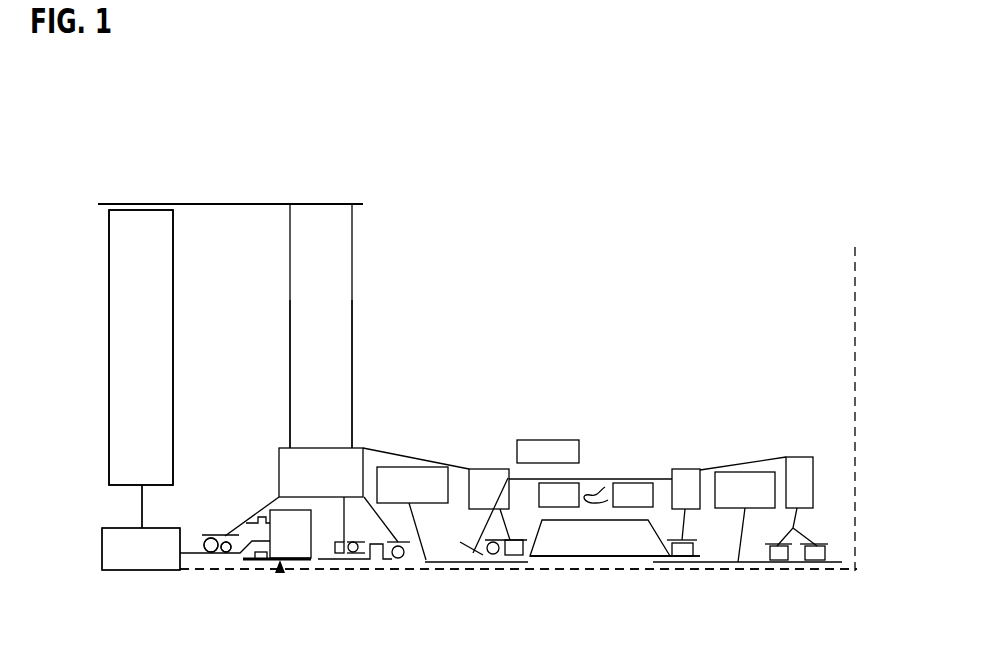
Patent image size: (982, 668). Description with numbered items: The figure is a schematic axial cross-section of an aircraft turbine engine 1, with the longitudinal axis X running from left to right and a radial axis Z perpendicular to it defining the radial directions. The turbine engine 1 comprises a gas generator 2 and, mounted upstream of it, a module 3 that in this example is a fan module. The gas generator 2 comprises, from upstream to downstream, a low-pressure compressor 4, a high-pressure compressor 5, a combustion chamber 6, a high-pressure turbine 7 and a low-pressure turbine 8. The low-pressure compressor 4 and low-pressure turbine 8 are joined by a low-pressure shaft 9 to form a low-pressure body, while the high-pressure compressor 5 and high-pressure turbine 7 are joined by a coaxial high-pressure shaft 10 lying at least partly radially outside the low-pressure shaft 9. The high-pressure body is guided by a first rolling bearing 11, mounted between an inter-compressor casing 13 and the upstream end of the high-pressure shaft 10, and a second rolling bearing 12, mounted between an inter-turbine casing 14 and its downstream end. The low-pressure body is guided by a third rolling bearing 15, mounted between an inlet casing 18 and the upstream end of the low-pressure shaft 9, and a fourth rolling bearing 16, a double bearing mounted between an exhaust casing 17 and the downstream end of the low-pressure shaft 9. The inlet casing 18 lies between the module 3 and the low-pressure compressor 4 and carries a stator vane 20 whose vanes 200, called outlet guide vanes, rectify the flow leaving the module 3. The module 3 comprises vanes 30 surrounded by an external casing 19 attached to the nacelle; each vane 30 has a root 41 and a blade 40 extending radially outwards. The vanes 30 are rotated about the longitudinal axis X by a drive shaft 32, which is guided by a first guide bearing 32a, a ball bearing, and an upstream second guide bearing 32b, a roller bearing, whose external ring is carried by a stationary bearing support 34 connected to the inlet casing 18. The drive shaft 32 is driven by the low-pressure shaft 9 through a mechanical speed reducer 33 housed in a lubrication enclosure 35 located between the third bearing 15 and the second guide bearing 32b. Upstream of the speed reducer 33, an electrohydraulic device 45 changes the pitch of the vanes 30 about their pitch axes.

The turbine engine 1 is at (554, 216).
The gas generator 2 is at (608, 392).
The module 3 is at (92, 450).
The low-pressure compressor 4 is at (425, 487).
The high-pressure compressor 5 is at (565, 485).
The combustion chamber 6 is at (598, 488).
The high-pressure turbine 7 is at (635, 490).
The low-pressure turbine 8 is at (730, 478).
The low-pressure shaft 9 is at (590, 565).
The high-pressure shaft 10 is at (540, 560).
The first rolling bearing 11 is at (480, 558).
The second rolling bearing 12 is at (668, 565).
The inter-compressor casing 13 is at (482, 475).
The inter-turbine casing 14 is at (682, 475).
The third rolling bearing 15 is at (393, 562).
The fourth rolling bearing 16 is at (820, 565).
The exhaust casing 17 is at (803, 470).
The inlet casing 18 is at (356, 452).
The external casing 19 is at (208, 204).
The stator vane 20 is at (372, 264).
The vanes 30 is at (80, 292).
The drive shaft 32 is at (218, 565).
The first guide bearing 32a is at (226, 541).
The second guide bearing 32b is at (210, 537).
The mechanical speed reducer 33 is at (303, 548).
The bearing support 34 is at (248, 518).
The lubrication enclosure 35 is at (372, 530).
The blade 40 is at (118, 378).
The root 41 is at (140, 488).
The pitch change device 45 is at (84, 554).
The vanes 200 is at (337, 360).
The longitudinal axis X is at (838, 572).
The radial axis Z is at (856, 265).